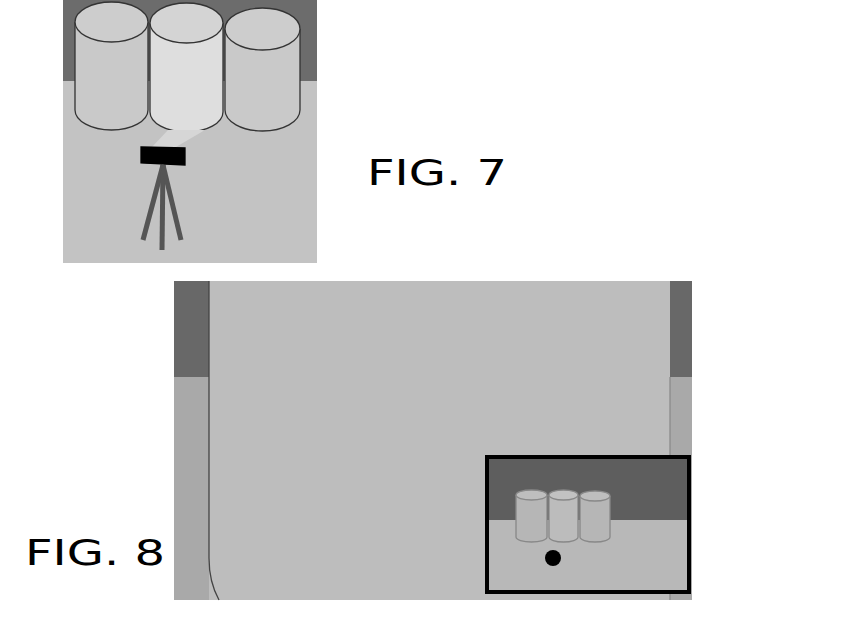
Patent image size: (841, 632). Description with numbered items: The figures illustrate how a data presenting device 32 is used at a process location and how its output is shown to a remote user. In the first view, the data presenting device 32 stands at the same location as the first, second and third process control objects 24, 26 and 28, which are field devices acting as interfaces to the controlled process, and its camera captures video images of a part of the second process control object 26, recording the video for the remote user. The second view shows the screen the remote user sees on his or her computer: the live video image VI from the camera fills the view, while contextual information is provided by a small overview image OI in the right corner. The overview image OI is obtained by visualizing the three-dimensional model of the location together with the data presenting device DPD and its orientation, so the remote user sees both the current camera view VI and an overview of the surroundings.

In FIG. 7, the first process control object 24 is at (111, 66).
In FIG. 7, the second process control object 26 is at (168, 147).
In FIG. 7, the third process control object 28 is at (262, 69).
In FIG. 7, the data presenting device 32 is at (162, 185).
In FIG. 8, the video image VI is at (597, 287).
In FIG. 8, the overview image OI is at (687, 502).
In FIG. 8, the data presenting device DPD is at (564, 557).